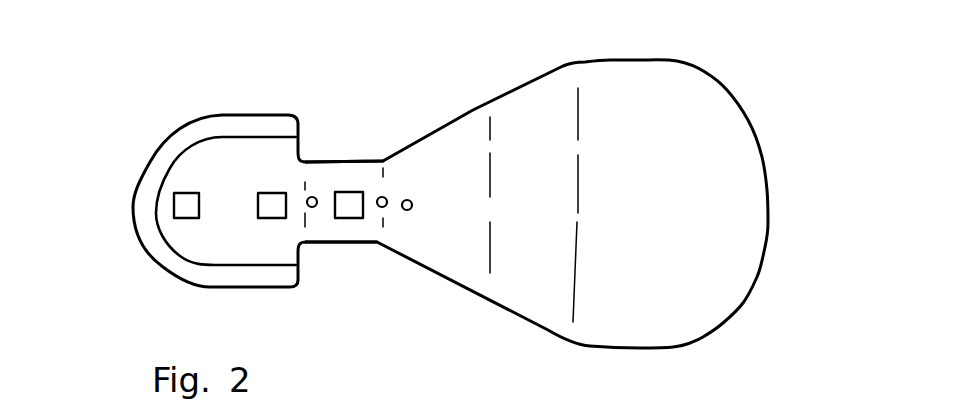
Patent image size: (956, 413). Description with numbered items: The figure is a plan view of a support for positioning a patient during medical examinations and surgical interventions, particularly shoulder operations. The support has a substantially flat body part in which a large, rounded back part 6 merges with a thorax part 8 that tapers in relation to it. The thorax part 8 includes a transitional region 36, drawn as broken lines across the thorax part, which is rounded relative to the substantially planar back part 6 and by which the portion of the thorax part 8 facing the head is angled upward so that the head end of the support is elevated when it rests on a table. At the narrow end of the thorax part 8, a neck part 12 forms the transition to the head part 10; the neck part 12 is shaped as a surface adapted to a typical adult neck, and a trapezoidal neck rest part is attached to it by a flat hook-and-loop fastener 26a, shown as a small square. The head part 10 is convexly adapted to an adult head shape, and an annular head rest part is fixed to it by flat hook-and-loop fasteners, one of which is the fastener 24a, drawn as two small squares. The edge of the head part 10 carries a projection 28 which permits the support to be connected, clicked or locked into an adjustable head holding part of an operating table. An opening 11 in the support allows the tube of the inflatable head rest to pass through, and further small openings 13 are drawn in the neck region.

The back part 6 is at (737, 77).
The thorax part 8 is at (423, 119).
The head part 10 is at (164, 121).
The opening 11 is at (310, 197).
The neck part 12 is at (345, 144).
The openings 13 is at (383, 197).
The flat hook-and-loop fastener 24a is at (176, 203).
The flat hook-and-loop fastener 26a is at (347, 207).
The projection 28 is at (153, 242).
The transitional region 36 is at (491, 127).